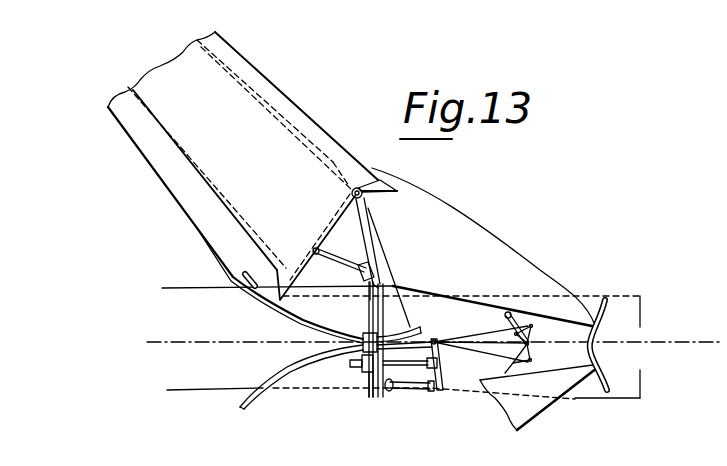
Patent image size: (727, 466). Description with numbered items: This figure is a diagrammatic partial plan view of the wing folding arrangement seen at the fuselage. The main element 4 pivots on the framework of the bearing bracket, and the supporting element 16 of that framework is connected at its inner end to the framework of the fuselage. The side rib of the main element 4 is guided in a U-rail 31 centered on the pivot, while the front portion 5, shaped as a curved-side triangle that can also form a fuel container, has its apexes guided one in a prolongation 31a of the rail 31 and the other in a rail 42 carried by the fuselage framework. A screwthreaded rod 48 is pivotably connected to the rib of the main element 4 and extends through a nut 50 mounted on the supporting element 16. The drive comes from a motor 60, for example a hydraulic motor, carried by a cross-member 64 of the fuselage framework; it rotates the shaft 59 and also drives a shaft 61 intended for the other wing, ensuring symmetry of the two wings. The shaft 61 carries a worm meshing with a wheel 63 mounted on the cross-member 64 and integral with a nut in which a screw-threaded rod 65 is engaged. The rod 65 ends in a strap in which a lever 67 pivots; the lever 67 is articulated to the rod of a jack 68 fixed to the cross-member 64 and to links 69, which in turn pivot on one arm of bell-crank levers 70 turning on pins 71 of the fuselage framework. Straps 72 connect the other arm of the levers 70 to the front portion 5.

The main element 4 is at (252, 166).
The front portion 5 is at (480, 263).
The element of bearing bracket framework 16 is at (373, 253).
The U-rail 31 is at (290, 315).
The prolongation of the rail 31a is at (415, 332).
The rail 42 is at (606, 314).
The screwthreaded rod 48 is at (347, 265).
The nut 50 is at (362, 277).
The shaft 59 is at (358, 297).
The motor 60 is at (308, 352).
The shaft 61 is at (367, 390).
The wheel 63 is at (367, 368).
The cross-member 64 is at (370, 312).
The screw-threaded rod 65 is at (392, 392).
The lever 67 is at (443, 378).
The jack 68 is at (408, 384).
The links 69 is at (481, 336).
The bell-crank levers 70 is at (533, 331).
The pins 71 is at (531, 344).
The straps 72 is at (505, 315).